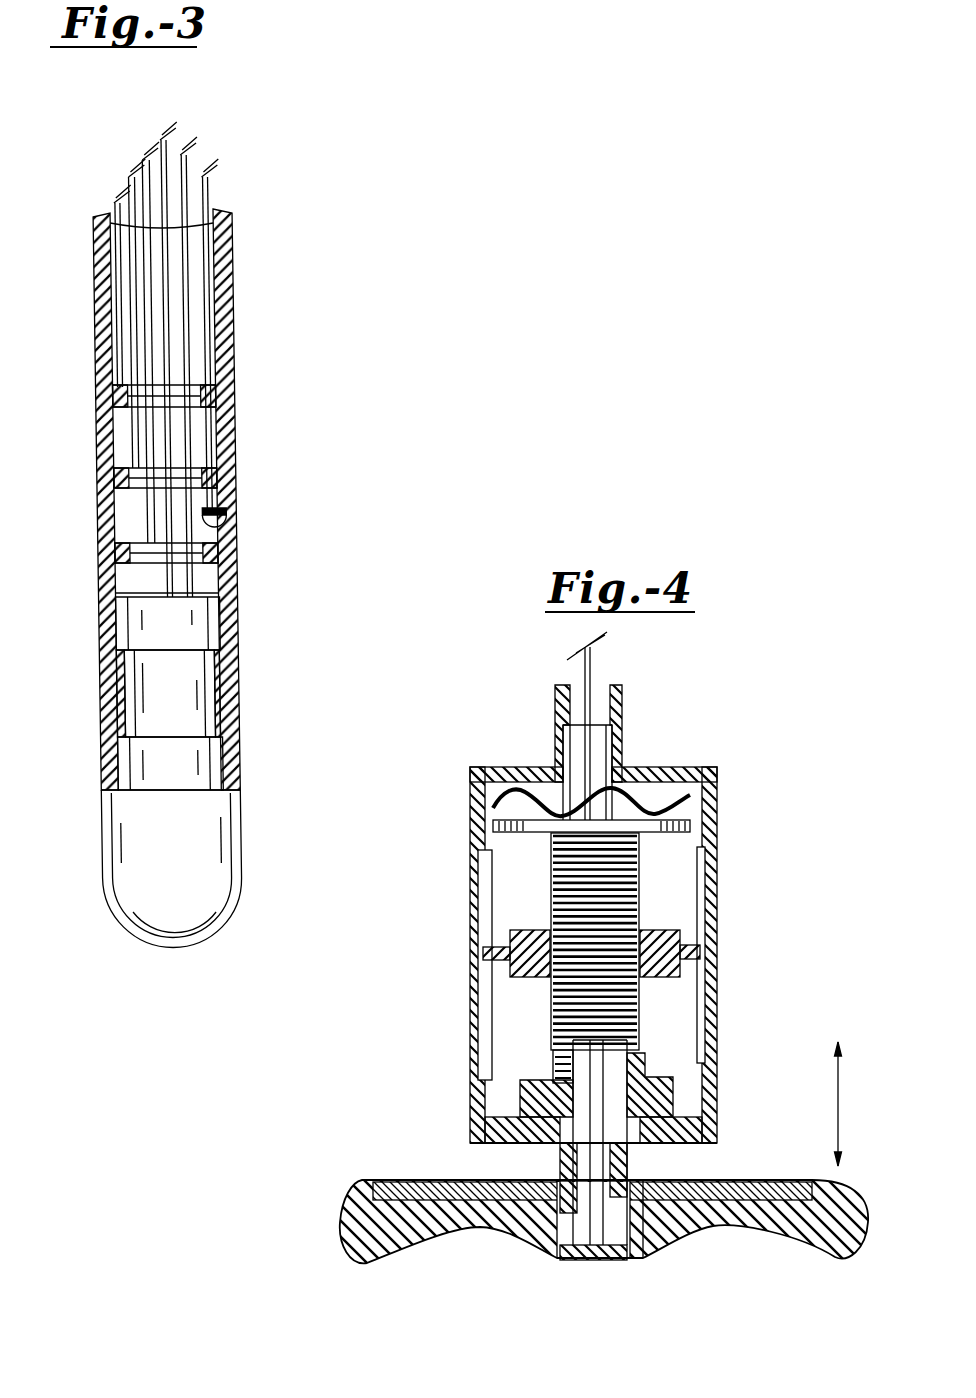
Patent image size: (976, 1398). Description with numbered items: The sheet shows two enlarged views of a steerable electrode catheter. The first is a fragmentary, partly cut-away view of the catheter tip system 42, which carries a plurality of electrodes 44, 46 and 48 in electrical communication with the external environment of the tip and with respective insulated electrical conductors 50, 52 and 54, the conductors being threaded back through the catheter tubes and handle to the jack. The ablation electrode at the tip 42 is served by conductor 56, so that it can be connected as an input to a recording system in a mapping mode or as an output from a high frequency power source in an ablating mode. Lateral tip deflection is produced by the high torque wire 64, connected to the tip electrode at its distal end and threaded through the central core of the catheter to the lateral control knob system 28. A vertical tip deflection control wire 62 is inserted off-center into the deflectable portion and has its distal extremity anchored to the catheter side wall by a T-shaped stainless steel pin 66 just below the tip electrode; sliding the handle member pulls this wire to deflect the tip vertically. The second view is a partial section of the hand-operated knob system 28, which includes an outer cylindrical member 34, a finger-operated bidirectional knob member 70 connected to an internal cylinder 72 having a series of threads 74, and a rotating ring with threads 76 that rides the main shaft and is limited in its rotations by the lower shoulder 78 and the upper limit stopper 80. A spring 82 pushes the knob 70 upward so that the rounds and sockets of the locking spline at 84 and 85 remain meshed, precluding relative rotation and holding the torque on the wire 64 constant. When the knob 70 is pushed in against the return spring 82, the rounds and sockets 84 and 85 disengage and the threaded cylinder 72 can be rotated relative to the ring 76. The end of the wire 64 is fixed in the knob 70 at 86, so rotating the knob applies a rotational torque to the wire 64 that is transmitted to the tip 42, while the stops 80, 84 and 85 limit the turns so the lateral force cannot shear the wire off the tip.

In FIG. 4, the lateral tip deflection control knob system 28 is at (571, 971).
In FIG. 4, the outer cylindrical member 34 is at (721, 795).
In FIG. 3, the catheter tip system 42 is at (170, 950).
In FIG. 3, the electrode 44 is at (236, 392).
In FIG. 3, the electrode 46 is at (236, 481).
In FIG. 3, the electrode 48 is at (236, 554).
In FIG. 3, the insulated electrical conductor 50 is at (112, 210).
In FIG. 3, the insulated electrical conductor 52 is at (130, 186).
In FIG. 3, the insulated electrical conductor 54 is at (137, 163).
In FIG. 3, the conductor 56 is at (192, 160).
In FIG. 3, the vertical tip deflection control wire 62 is at (205, 186).
In FIG. 3, the high torque wire 64 is at (172, 138).
In FIG. 4, the high torque wire 64 is at (580, 676).
In FIG. 3, the T-shaped stainless steel pin 66 is at (236, 525).
In FIG. 4, the knob member 70 is at (357, 1240).
In FIG. 4, the internal cylinder 72 is at (552, 1008).
In FIG. 4, the threads 74 is at (553, 995).
In FIG. 4, the rotating ring with threads 76 is at (527, 940).
In FIG. 4, the lower shoulder 78 is at (660, 1077).
In FIG. 4, the upper limit stopper 80 is at (513, 835).
In FIG. 4, the spring 82 is at (500, 803).
In FIG. 4, the locking spline (rounds and sockets) 84 is at (540, 1095).
In FIG. 4, the locking spline (rounds and sockets) 85 is at (665, 1138).
In FIG. 4, the wire anchor 86 is at (560, 1185).